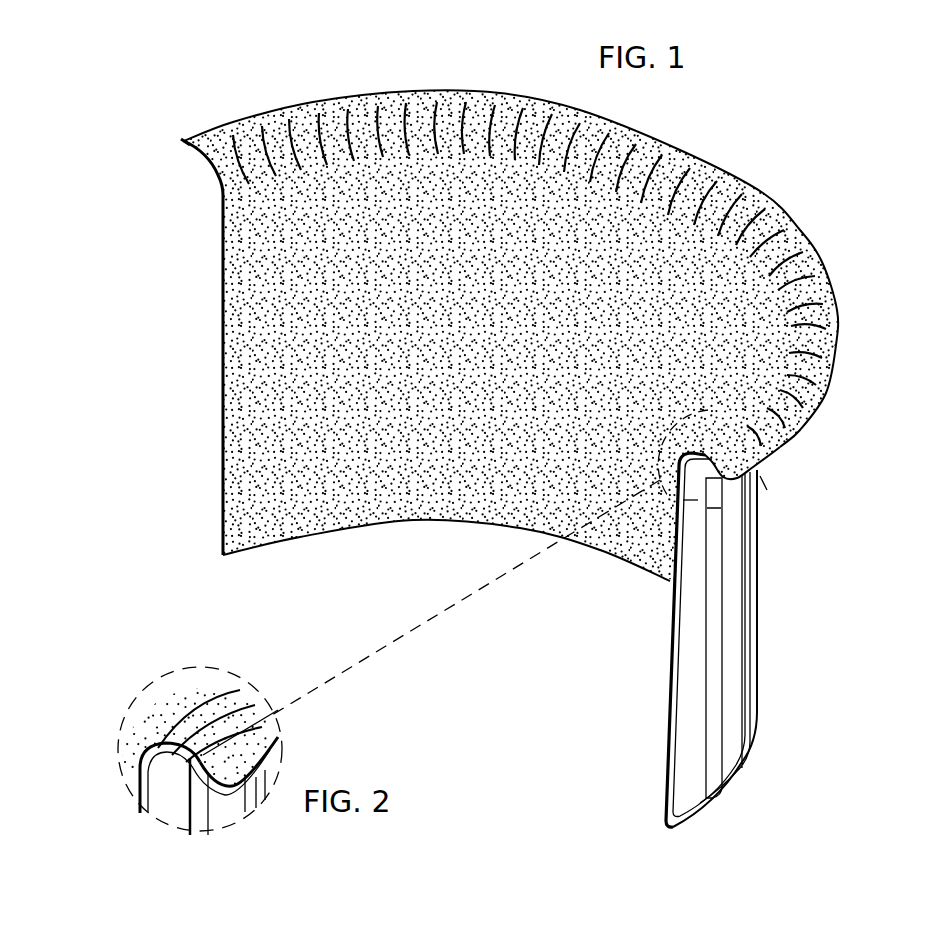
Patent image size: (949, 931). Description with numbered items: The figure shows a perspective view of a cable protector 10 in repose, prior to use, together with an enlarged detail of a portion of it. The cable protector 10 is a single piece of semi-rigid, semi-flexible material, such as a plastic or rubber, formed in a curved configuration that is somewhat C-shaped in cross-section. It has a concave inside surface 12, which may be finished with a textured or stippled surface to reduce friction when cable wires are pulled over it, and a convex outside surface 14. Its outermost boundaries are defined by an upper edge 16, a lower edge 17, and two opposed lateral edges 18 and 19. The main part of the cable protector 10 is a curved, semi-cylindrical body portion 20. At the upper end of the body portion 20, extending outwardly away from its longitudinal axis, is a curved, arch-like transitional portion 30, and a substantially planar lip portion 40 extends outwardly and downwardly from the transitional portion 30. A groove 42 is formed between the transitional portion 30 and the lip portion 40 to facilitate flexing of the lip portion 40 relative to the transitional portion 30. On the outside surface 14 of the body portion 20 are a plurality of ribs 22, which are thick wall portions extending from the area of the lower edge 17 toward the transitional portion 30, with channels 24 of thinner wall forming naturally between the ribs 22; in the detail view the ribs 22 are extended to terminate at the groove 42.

In FIG. 1, the cable protector 10 is at (773, 137).
In FIG. 1, the inside surface 12 is at (618, 321).
In FIG. 1, the outside surface 14 is at (770, 515).
In FIG. 1, the upper edge 16 is at (437, 86).
In FIG. 1, the lower edge 17 is at (438, 524).
In FIG. 1, the lateral edge 18 is at (219, 380).
In FIG. 1, the lateral edge 19 is at (665, 668).
In FIG. 1, the body portion 20 is at (770, 576).
In FIG. 1, the ribs 22 is at (734, 659).
In FIG. 2, the ribs 22 is at (230, 815).
In FIG. 1, the channels 24 is at (711, 726).
In FIG. 2, the channels 24 is at (196, 818).
In FIG. 1, the transitional portion 30 is at (219, 172).
In FIG. 2, the transitional portion 30 is at (139, 752).
In FIG. 1, the lip portion 40 is at (820, 320).
In FIG. 2, the lip portion 40 is at (241, 774).
In FIG. 1, the groove 42 is at (183, 148).
In FIG. 2, the groove 42 is at (278, 710).